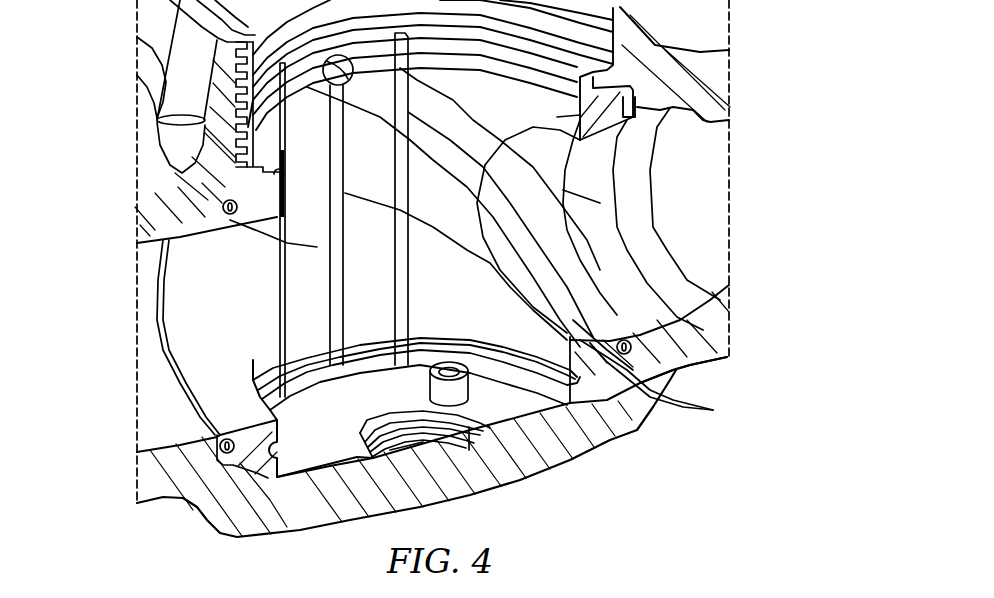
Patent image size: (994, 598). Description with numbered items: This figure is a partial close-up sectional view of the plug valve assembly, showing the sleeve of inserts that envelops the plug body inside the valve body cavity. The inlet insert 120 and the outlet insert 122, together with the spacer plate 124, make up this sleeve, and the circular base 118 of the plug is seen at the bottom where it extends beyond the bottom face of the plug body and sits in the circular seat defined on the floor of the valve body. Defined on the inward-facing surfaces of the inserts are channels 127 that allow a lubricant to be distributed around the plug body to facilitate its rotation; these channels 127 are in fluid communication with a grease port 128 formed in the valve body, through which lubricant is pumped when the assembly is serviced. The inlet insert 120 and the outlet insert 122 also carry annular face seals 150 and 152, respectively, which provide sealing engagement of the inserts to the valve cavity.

The circular base 118 is at (355, 430).
The inlet insert 120 is at (195, 326).
The outlet insert 122 is at (631, 88).
The spacer plate 124 is at (222, 200).
The channels 127 is at (713, 410).
The grease port 128 is at (558, 193).
The annular face seal 150 is at (220, 440).
The annular face seal 152 is at (632, 348).